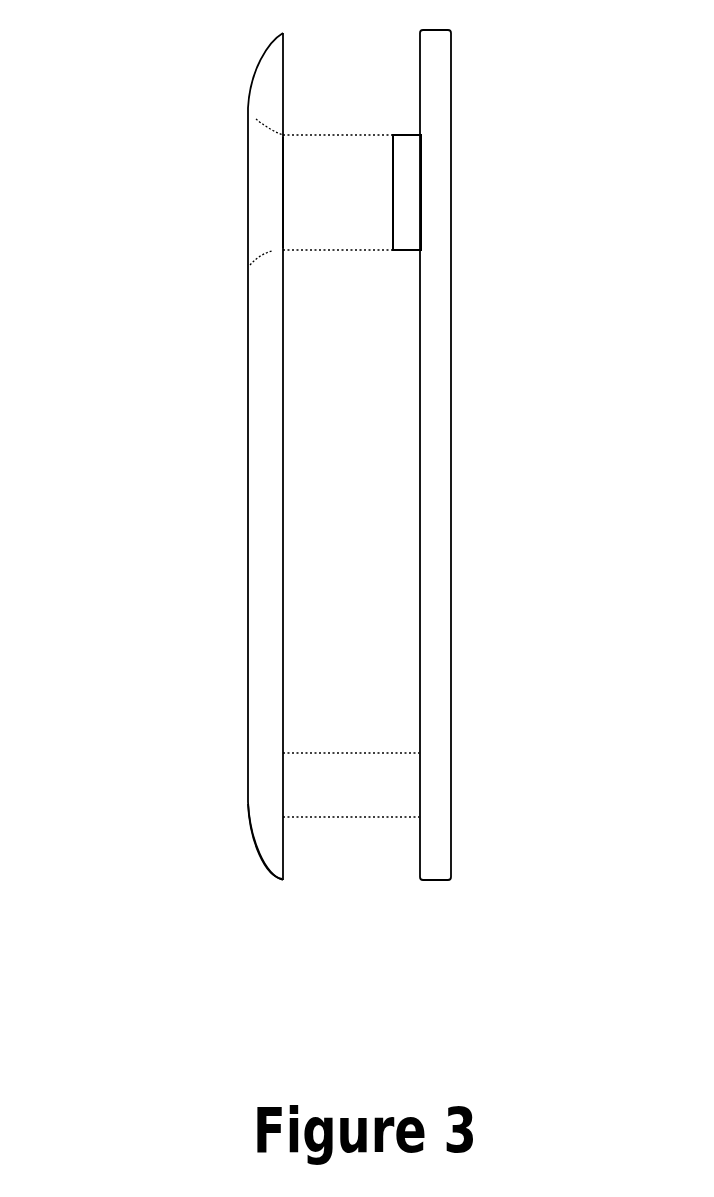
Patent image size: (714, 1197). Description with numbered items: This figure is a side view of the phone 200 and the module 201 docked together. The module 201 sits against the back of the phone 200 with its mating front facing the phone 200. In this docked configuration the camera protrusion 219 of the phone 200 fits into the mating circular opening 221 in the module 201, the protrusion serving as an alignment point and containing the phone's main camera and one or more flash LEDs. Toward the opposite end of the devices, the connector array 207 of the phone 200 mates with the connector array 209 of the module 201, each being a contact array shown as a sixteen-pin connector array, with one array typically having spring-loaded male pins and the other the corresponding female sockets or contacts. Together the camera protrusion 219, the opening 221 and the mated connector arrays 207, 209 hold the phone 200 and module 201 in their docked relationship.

The phone 200 is at (483, 478).
The module 201 is at (176, 478).
The connector array 207 is at (418, 783).
The connector array 209 is at (282, 788).
The camera protrusion 219 is at (404, 192).
The circular opening 221 is at (213, 132).